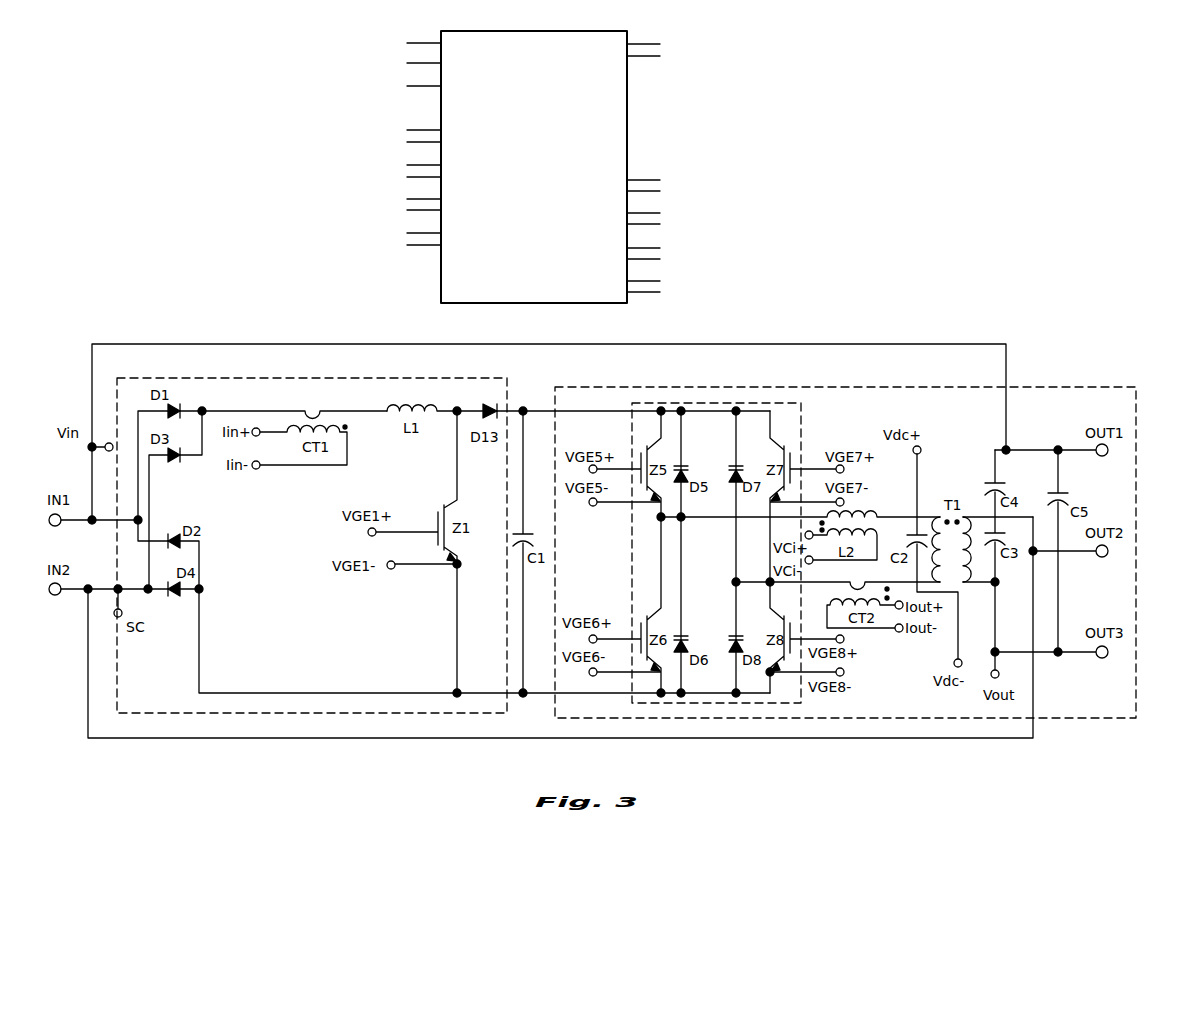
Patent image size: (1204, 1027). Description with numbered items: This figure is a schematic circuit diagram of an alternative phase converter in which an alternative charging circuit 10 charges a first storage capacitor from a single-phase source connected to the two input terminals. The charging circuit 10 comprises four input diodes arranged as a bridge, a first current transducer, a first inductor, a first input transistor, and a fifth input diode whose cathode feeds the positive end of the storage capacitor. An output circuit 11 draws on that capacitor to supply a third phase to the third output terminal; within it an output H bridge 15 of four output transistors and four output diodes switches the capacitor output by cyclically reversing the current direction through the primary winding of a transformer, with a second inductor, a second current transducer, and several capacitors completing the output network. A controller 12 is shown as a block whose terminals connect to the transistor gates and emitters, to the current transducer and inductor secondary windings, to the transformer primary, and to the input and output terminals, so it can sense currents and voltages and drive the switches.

The charging circuit 10 is at (440, 377).
The output circuit 11 is at (618, 387).
The controller 12 is at (441, 284).
The output H bridge 15 is at (801, 425).